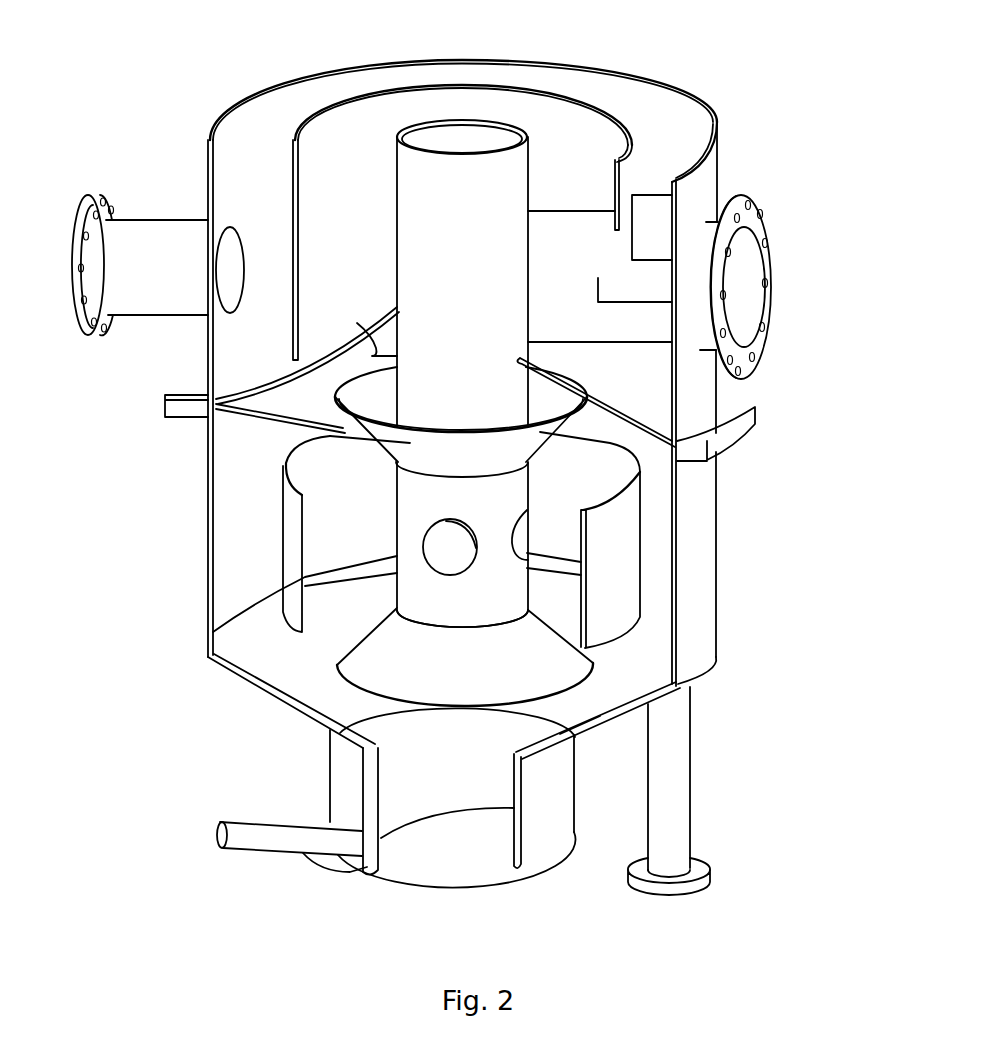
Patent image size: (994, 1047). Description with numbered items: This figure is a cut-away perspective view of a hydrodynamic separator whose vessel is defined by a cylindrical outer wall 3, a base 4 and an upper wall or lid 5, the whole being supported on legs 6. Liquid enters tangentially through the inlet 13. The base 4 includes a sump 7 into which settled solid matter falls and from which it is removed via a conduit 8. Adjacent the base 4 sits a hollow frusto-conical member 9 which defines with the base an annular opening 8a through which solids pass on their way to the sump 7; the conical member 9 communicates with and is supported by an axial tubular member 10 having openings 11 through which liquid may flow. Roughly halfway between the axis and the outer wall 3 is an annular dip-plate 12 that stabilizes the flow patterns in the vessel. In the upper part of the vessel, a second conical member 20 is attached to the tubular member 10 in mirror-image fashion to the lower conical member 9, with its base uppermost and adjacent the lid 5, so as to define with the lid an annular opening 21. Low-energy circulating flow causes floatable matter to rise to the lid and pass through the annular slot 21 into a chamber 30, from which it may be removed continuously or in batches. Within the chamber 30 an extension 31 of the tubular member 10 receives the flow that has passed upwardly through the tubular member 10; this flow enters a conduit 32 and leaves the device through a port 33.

The cylindrical outer wall 3 is at (698, 606).
The base 4 is at (280, 683).
The upper wall or lid 5 is at (370, 320).
The legs 6 is at (670, 790).
The sump 7 is at (453, 843).
The conduit 8 is at (282, 838).
The annular opening 8a is at (585, 710).
The frusto-conical member 9 is at (398, 653).
The tubular member 10 is at (430, 595).
The openings 11 is at (445, 543).
The annular dip-plate 12 is at (622, 534).
The inlet 13 is at (172, 243).
The conical member 20 is at (283, 442).
The annular opening 21 is at (343, 373).
The chamber 30 is at (367, 120).
The extension 31 is at (503, 172).
The conduit 32 is at (598, 278).
The port 33 is at (747, 290).